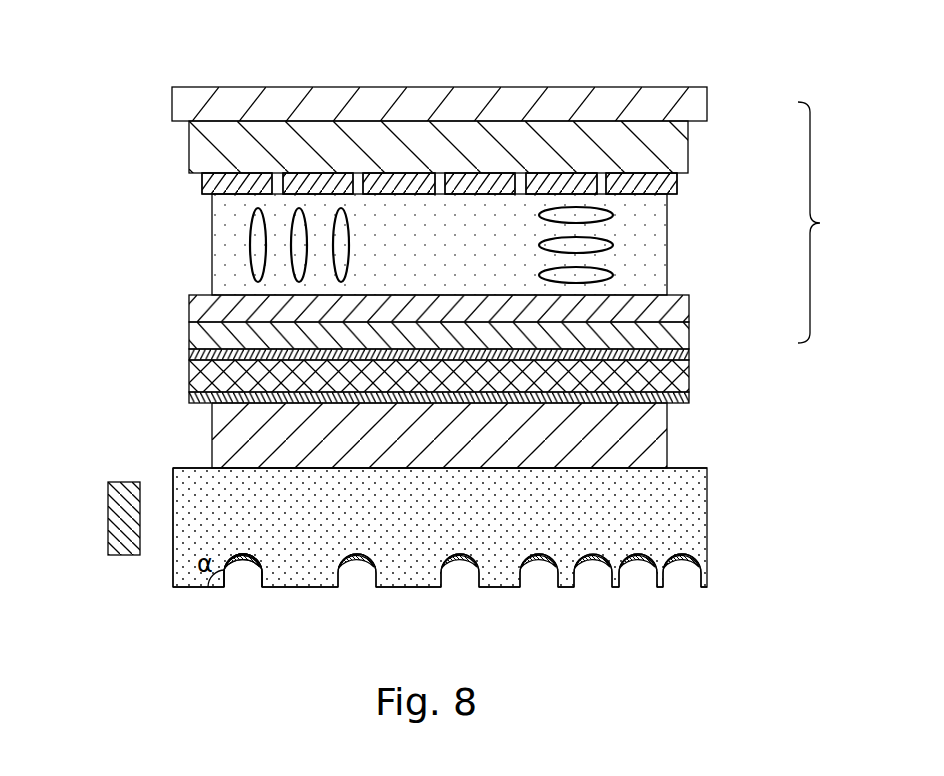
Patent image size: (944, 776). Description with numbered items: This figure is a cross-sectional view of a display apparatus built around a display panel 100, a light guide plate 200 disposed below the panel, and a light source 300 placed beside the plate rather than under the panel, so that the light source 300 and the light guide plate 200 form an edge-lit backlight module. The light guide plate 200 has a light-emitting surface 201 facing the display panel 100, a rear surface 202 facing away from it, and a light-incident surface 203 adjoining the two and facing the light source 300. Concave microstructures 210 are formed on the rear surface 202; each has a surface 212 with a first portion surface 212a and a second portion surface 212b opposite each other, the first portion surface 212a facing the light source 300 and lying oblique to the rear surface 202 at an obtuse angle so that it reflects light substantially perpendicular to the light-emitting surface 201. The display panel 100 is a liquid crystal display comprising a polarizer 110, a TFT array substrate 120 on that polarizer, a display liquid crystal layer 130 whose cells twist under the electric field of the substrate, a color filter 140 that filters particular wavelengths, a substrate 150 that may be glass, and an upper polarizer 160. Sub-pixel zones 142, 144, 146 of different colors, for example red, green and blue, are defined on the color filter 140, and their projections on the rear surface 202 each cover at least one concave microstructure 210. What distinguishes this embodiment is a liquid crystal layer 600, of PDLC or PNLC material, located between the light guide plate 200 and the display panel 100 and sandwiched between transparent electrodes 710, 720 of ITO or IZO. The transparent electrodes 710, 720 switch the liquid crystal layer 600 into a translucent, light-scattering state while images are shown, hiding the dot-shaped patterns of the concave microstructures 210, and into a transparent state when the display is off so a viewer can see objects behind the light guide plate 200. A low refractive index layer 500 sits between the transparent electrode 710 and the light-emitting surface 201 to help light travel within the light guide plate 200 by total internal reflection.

The display panel 100 is at (832, 222).
The polarizer 110 is at (682, 337).
The TFT array substrate 120 is at (682, 310).
The display liquid crystal layer 130 is at (662, 228).
The color filter 140 is at (670, 183).
The sub-pixel zone 142 is at (237, 180).
The sub-pixel zone 144 is at (318, 180).
The sub-pixel zone 146 is at (400, 180).
The substrate 150 is at (687, 142).
The polarizer 160 is at (700, 103).
The light guide plate 200 is at (700, 513).
The light-emitting surface 201 is at (183, 468).
The rear surface 202 is at (182, 588).
The light-incident surface 203 is at (172, 478).
The concave microstructures 210 is at (264, 585).
The surface 212 is at (310, 645).
The first portion surface 212a is at (225, 590).
The second portion surface 212b is at (262, 590).
The light source 300 is at (115, 517).
The low refractive index layer 500 is at (662, 437).
The liquid crystal layer 600 is at (685, 373).
The transparent electrode 710 is at (685, 400).
The transparent electrode 720 is at (687, 353).